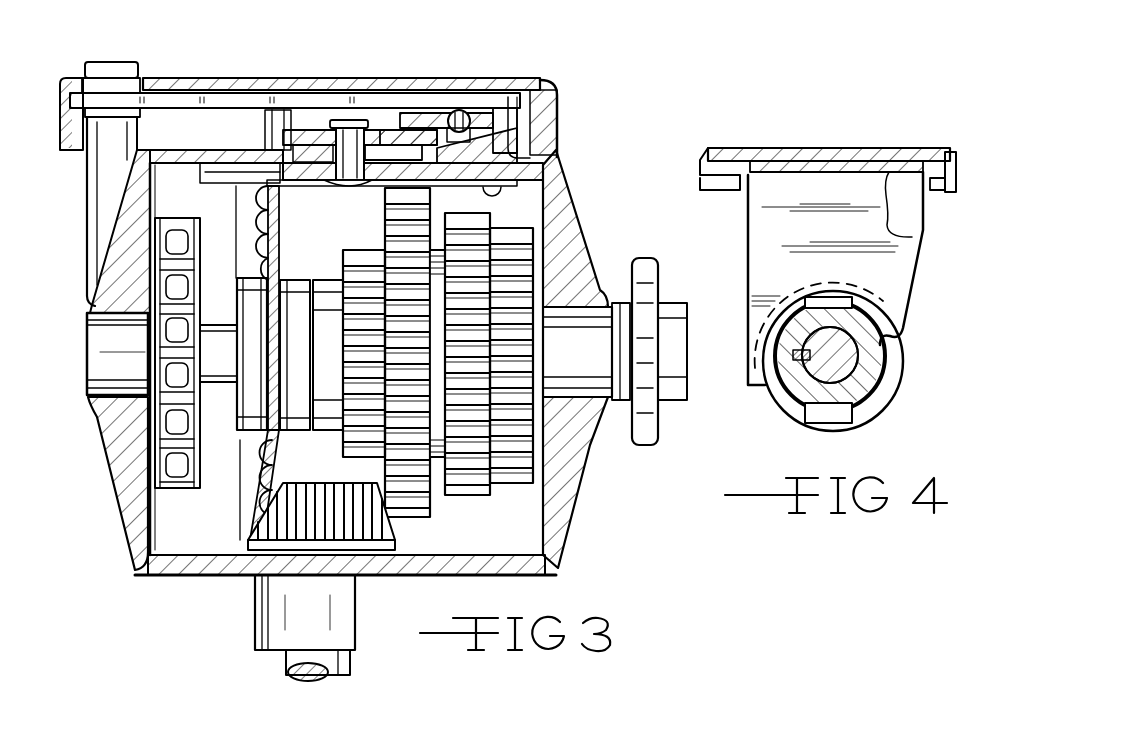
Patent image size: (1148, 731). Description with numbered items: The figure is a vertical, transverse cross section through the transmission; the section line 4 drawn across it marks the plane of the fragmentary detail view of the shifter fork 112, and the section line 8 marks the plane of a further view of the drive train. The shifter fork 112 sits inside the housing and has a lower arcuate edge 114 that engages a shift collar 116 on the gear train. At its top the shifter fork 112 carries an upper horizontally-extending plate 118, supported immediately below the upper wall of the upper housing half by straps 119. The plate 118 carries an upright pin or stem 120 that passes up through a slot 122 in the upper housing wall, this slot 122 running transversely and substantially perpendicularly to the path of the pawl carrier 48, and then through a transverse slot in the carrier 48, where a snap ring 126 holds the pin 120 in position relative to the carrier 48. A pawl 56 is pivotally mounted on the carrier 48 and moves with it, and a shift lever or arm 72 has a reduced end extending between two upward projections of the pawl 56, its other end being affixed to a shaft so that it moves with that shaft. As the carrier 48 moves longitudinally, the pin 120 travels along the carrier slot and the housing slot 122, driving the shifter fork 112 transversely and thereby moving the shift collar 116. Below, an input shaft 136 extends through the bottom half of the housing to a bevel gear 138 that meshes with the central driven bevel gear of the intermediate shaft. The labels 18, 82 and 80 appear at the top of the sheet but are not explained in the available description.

In FIG. 3, the shift lever or arm 72 is at (197, 80).
In FIG. 3, the housing slot 122 is at (310, 140).
In FIG. 3, the upright pin or stem 120 is at (349, 118).
In FIG. 3, the snap ring 126 is at (391, 112).
In FIG. 3, the carrier 48 is at (396, 112).
In FIG. 3, the pawl 56 is at (440, 98).
In FIG. 3, the housing cover 18 is at (490, 4).
In FIG. 3, the flange 82 is at (575, 0).
In FIG. 3, the wall 80 is at (647, 0).
In FIG. 3, the upper horizontally-extending plate 118 is at (483, 152).
In FIG. 4, the upper horizontally-extending plate 118 is at (912, 237).
In FIG. 3, the straps 119 is at (483, 207).
In FIG. 4, the straps 119 is at (712, 188).
In FIG. 3, the shifter fork 112 is at (288, 248).
In FIG. 4, the shifter fork 112 is at (740, 250).
In FIG. 3, the section line 4— 4 is at (292, 138).
In FIG. 3, the section line 8— 8 is at (108, 350).
In FIG. 3, the shift collar 116 is at (297, 440).
In FIG. 4, the shift collar 116 is at (878, 407).
In FIG. 4, the lower arcuate edge 114 is at (878, 367).
In FIG. 3, the input shaft 136 is at (288, 663).
In FIG. 3, the bevel gear 138 is at (400, 549).